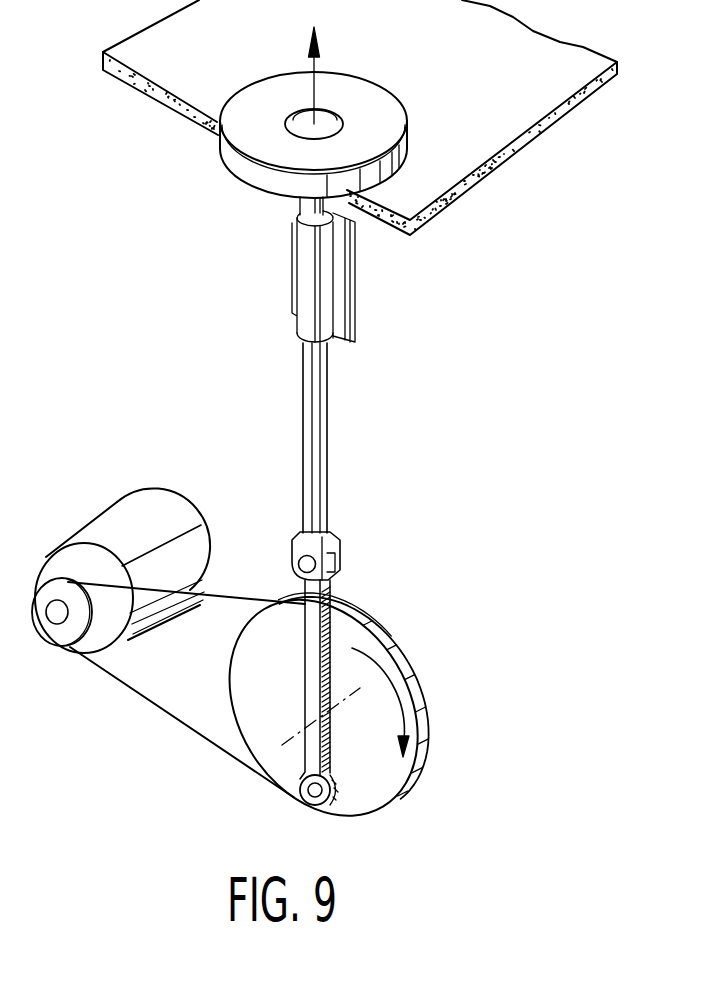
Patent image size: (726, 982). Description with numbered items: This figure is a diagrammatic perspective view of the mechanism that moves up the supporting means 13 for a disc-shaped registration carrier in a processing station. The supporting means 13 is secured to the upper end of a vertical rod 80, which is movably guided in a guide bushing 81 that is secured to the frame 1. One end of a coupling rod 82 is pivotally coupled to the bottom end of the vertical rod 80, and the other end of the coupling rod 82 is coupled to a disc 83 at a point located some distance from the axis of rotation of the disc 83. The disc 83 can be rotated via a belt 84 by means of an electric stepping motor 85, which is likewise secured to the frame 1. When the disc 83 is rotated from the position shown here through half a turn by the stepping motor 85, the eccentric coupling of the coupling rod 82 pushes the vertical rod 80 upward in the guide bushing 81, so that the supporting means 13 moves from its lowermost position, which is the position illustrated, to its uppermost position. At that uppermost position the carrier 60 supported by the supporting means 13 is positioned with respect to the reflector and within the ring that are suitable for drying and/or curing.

The frame 1 is at (438, 170).
The carrier 60 is at (253, 143).
The supporting means 13 is at (255, 179).
The guide bushing 81 is at (308, 267).
The vertical rod 80 is at (315, 390).
The coupling rod 82 is at (313, 660).
The disc 83 is at (392, 782).
The belt 84 is at (197, 728).
The electric stepping motor 85 is at (117, 517).